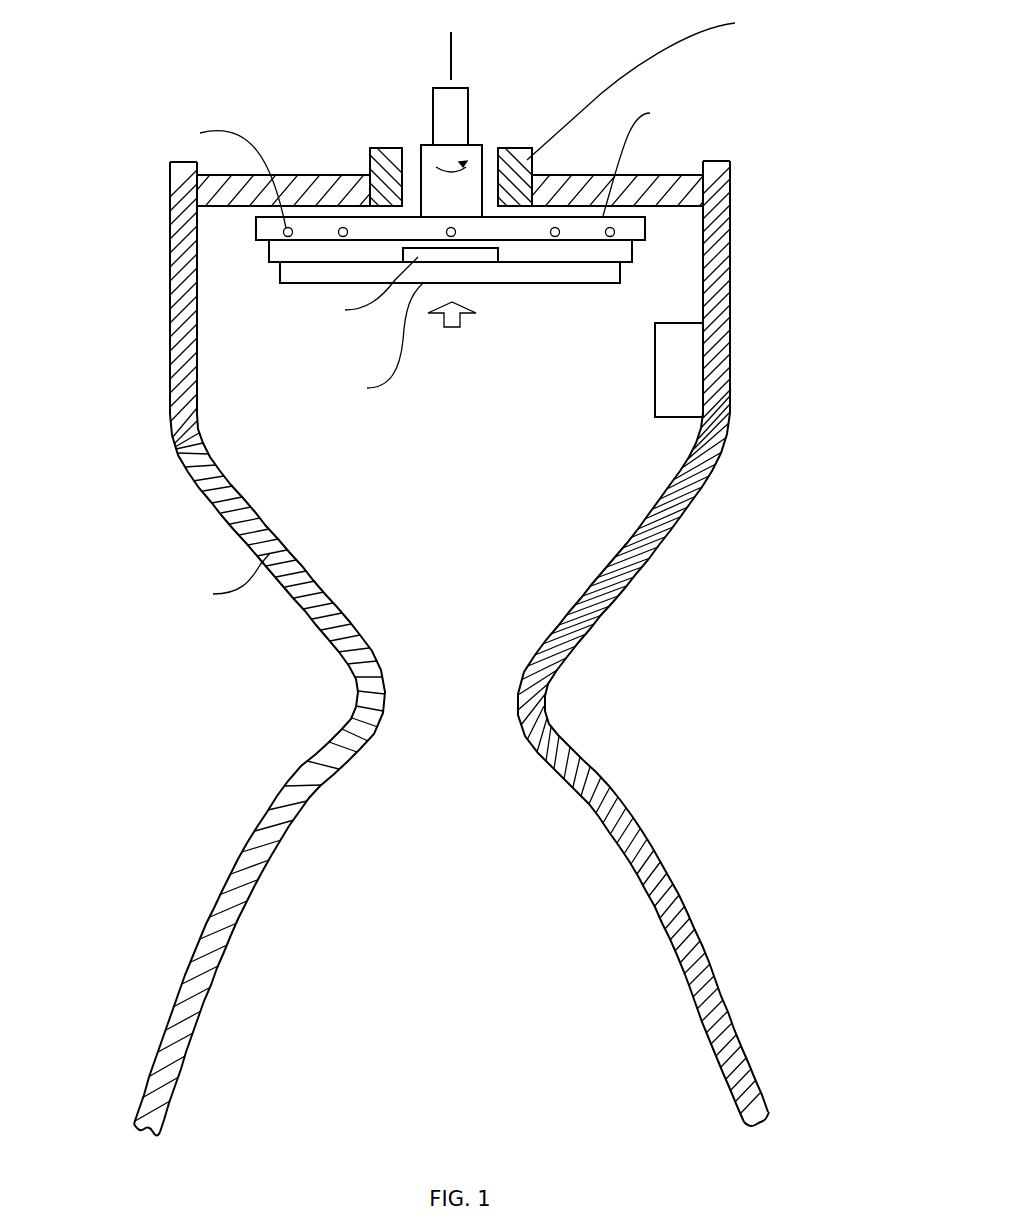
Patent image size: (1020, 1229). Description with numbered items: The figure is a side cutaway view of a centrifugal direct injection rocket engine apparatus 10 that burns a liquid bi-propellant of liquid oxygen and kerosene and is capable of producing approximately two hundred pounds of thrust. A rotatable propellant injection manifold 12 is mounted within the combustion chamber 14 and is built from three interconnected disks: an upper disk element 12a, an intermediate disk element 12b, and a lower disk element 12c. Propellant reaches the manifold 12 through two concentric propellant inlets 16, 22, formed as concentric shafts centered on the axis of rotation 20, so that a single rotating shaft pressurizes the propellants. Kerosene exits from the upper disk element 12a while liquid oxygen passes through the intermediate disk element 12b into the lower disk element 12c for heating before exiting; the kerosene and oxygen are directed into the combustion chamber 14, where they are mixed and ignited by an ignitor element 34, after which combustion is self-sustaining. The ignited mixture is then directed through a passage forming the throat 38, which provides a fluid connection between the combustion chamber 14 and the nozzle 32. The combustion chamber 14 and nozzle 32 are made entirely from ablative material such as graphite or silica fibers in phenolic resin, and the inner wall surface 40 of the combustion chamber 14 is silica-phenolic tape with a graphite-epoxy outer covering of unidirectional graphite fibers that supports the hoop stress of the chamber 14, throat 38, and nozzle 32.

The rocket engine apparatus 10 is at (467, 573).
The propellant injection manifold 12 is at (479, 251).
The upper disk element 12a is at (646, 222).
The intermediate disk element 12b is at (632, 250).
The lower disk element 12c is at (620, 277).
The combustion chamber 14 is at (450, 450).
The propellant inlet 16 is at (482, 146).
The axis of rotation 20 is at (451, 50).
The propellant inlet 22 is at (433, 91).
The nozzle 32 is at (460, 940).
The ignitor element 34 is at (678, 400).
The throat 38 is at (455, 680).
The inner wall surface 40 is at (685, 508).